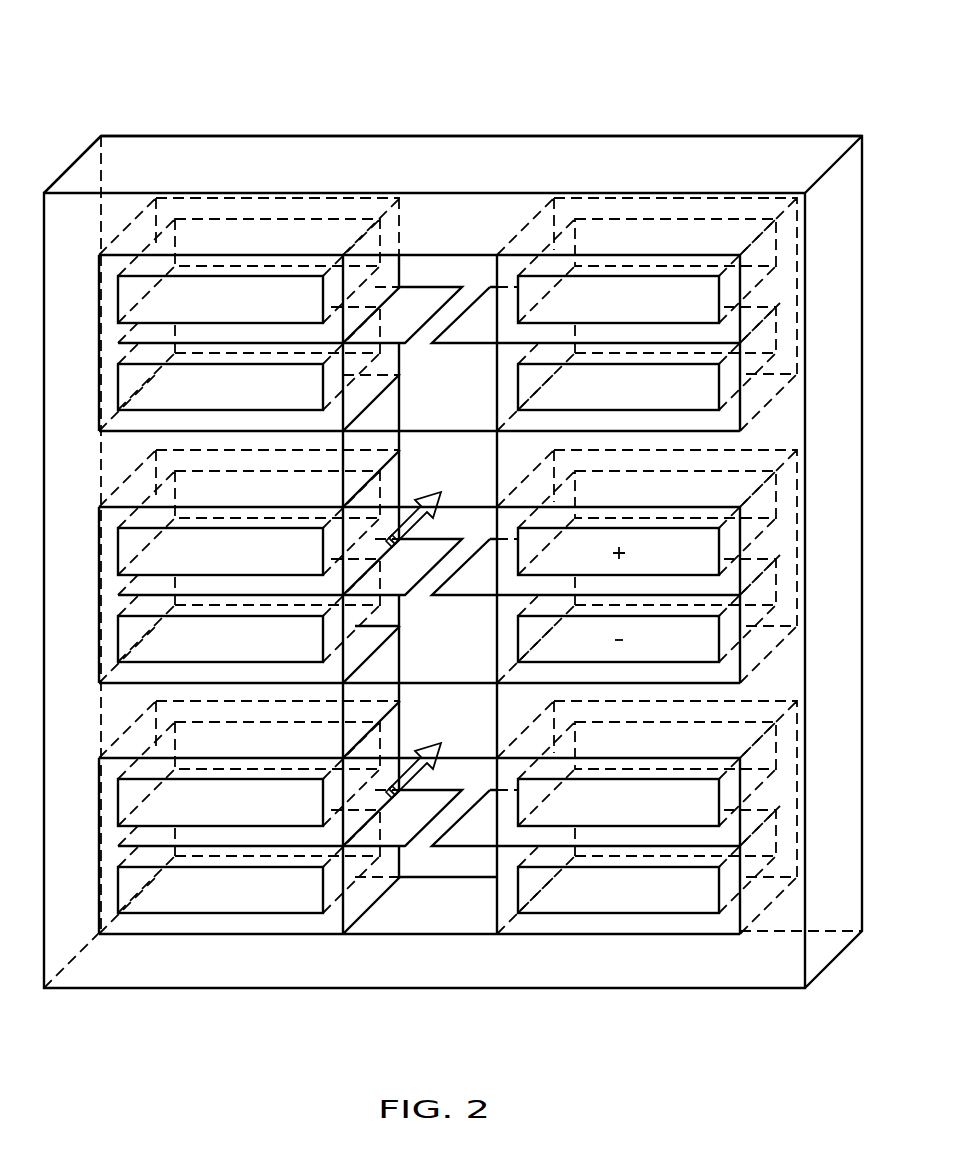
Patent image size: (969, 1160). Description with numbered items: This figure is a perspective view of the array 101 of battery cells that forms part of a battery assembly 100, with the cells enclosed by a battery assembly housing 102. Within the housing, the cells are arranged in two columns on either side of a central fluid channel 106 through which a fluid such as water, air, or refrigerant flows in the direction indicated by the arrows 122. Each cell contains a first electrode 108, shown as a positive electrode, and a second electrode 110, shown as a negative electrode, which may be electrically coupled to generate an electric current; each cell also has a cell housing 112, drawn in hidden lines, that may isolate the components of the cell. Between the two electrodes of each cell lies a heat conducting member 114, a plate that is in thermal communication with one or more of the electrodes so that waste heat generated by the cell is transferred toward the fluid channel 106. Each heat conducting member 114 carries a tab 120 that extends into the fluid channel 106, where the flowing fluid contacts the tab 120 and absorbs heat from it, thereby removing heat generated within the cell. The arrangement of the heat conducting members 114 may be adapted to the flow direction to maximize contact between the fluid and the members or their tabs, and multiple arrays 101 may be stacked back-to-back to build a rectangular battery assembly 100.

The battery assembly 100 is at (462, 500).
The array 101 is at (110, 109).
The battery assembly housing 102 is at (528, 136).
The fluid channel 106 is at (475, 456).
The first electrode 108 is at (680, 543).
The second electrode 110 is at (708, 648).
The cell housing 112 is at (772, 459).
The heat conducting member 114 is at (707, 586).
The tab 120 is at (415, 296).
The arrows 122 is at (393, 792).